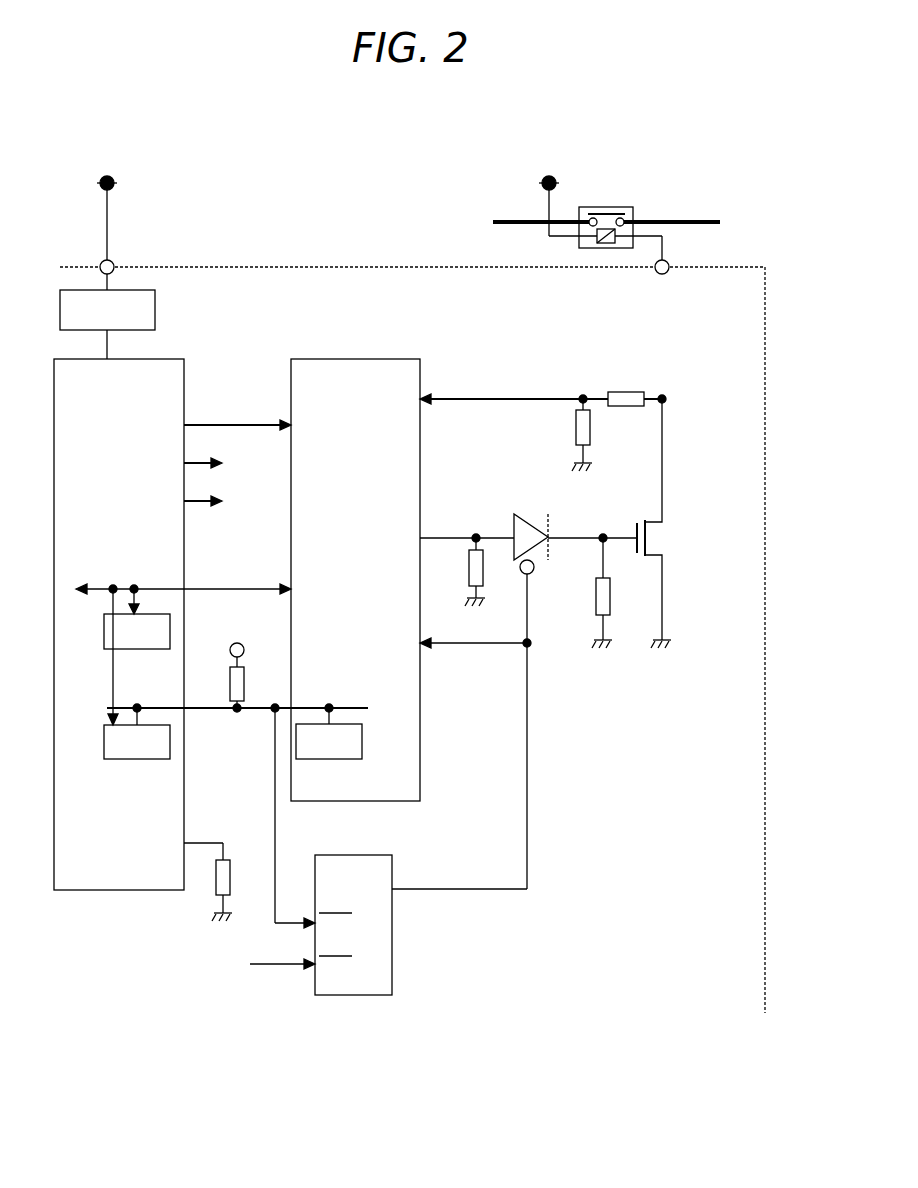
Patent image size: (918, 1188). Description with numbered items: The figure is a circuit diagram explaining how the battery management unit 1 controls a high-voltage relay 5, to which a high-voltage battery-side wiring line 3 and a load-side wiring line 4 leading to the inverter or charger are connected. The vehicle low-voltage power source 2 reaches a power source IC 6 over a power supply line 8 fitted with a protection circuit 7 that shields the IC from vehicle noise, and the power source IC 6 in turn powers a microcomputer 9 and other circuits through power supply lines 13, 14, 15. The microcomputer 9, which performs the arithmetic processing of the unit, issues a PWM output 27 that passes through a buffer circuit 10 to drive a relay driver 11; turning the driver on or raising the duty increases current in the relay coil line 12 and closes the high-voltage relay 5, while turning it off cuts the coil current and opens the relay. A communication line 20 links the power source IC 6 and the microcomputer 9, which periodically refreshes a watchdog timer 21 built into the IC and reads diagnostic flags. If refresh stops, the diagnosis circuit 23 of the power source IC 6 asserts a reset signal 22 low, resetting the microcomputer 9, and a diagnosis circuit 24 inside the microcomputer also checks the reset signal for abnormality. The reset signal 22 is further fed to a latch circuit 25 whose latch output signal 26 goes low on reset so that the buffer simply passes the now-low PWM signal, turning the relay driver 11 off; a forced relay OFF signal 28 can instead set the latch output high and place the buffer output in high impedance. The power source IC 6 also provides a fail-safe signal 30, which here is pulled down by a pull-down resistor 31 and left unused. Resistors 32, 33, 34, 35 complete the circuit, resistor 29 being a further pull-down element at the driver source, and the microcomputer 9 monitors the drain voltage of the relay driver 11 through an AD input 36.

The battery management unit 1 is at (235, 267).
The low-voltage power source 2 is at (118, 178).
The high-voltage battery-side wiring line 3 is at (512, 215).
The load-side wiring line 4 is at (700, 220).
The high-voltage relay 5 is at (638, 207).
The power source IC 6 is at (184, 388).
The protection circuit 7 is at (157, 312).
The power supply line 8 is at (105, 348).
The microcomputer 9 is at (422, 379).
The buffer circuit 10 is at (540, 520).
The relay driver 11 is at (667, 516).
The relay coil line 12 is at (670, 260).
The power supply line 13 is at (208, 424).
The power supply line 14 is at (200, 462).
The power supply line 15 is at (200, 500).
The communication line 20 is at (200, 588).
The watchdog timer 21 is at (170, 618).
The reset signal 22 is at (254, 705).
The diagnosis circuit 23 is at (130, 760).
The diagnosis circuit 24 is at (364, 745).
The latch circuit 25 is at (393, 863).
The latch output signal 26 is at (528, 740).
The PWM output 27 is at (430, 533).
The forced relay OFF signal 28 is at (292, 965).
The pull-down resistor 29 is at (612, 600).
The fail-safe signal 30 is at (194, 838).
The pull-down resistor 31 is at (231, 875).
The resistor 32 is at (222, 689).
The resistor 33 is at (472, 566).
The resistor 34 is at (614, 391).
The resistor 35 is at (590, 437).
The AD input 36 is at (472, 397).